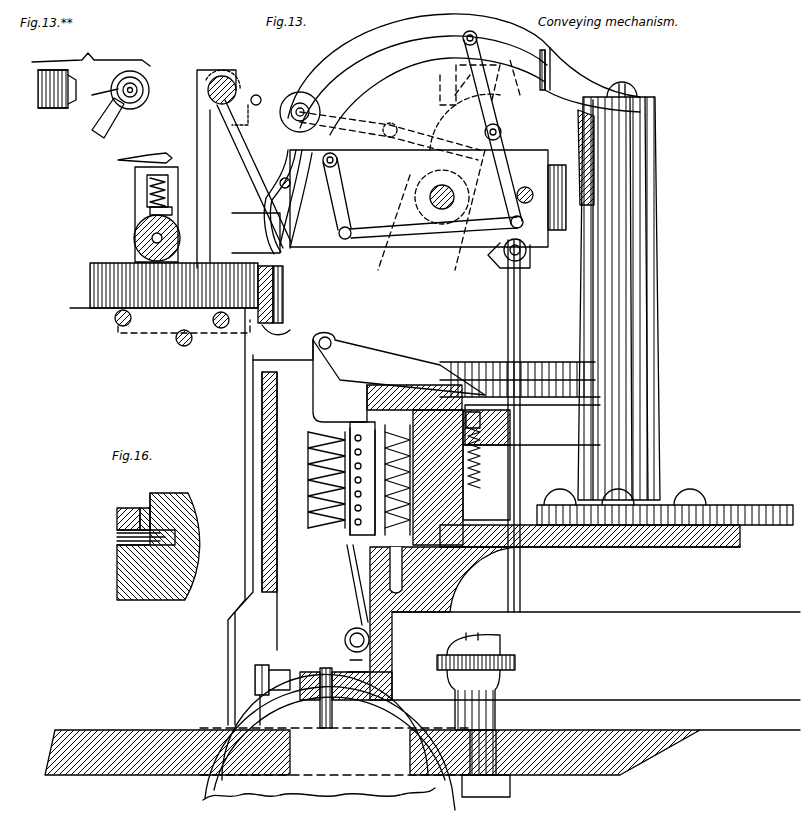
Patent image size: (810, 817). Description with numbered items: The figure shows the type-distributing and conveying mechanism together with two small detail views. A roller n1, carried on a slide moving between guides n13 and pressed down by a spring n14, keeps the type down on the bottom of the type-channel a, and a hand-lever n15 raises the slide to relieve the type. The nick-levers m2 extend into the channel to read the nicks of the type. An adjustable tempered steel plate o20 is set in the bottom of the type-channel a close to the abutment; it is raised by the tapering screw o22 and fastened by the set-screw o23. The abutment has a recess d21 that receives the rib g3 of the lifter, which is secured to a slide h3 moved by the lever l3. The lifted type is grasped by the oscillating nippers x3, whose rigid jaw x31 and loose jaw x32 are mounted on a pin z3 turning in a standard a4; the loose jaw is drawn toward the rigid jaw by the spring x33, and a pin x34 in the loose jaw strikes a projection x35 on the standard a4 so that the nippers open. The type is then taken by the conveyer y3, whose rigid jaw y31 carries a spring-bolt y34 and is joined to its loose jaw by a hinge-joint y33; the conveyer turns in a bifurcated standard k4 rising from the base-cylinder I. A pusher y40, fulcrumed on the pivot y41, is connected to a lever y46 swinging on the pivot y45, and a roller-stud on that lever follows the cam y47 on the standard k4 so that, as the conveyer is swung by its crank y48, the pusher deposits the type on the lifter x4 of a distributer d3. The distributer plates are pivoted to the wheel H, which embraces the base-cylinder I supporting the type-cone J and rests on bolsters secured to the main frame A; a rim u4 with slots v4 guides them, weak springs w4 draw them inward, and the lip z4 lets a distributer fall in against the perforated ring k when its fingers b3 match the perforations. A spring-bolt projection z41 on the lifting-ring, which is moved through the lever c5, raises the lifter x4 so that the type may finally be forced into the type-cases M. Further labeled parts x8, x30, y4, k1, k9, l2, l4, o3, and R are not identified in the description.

The spring x33 is at (70, 78).
The link x8 is at (101, 97).
The oscillating nippers x3 is at (108, 118).
In FIG. 13, the oscillating nippers x3 is at (278, 202).
In FIG. 16, the adjustable tempered steel plate o20 is at (144, 508).
In FIG. 13, the adjustable tempered steel plate o20 is at (184, 322).
In FIG. 16, the tapering screw o22 is at (120, 536).
In FIG. 13, the tapering screw o22 is at (189, 342).
In FIG. 16, the type-cone J is at (158, 546).
In FIG. 13, the cam y47 is at (476, 30).
In FIG. 13, the lever y46 is at (490, 108).
In FIG. 13, the pivot y45 is at (502, 132).
In FIG. 13, the conveyer y3 is at (419, 198).
In FIG. 13, the hinge-joint y33 is at (556, 172).
In FIG. 13, the spring-bolt y34 is at (526, 187).
In FIG. 13, the pivot y41 is at (334, 155).
In FIG. 13, the rigid jaw of conveyer y31 is at (436, 220).
In FIG. 13, the shaft y4 is at (442, 197).
In FIG. 13, the pusher y40 is at (302, 199).
In FIG. 13, the crank y48 is at (505, 253).
In FIG. 13, the rod k1 is at (580, 405).
In FIG. 13, the bifurcated standard k4 is at (619, 291).
In FIG. 13, the slots v4 is at (492, 362).
In FIG. 13, the rim u4 is at (535, 362).
In FIG. 13, the base-cylinder I is at (533, 424).
In FIG. 13, the lifter x4 is at (399, 364).
In FIG. 13, the distributer d3 is at (387, 381).
In FIG. 13, the type-cases M is at (446, 555).
In FIG. 13, the lip z4 is at (364, 467).
In FIG. 13, the fingers b3 is at (321, 477).
In FIG. 13, the lever c5 is at (363, 480).
In FIG. 13, the projection z41 is at (482, 414).
In FIG. 13, the lever l3 is at (270, 660).
In FIG. 13, the slide h3 is at (282, 477).
In FIG. 13, the rib g3 is at (270, 350).
In FIG. 13, the perforated ring k is at (275, 695).
In FIG. 13, the weak springs w4 is at (357, 608).
In FIG. 13, the pin k9 is at (346, 698).
In FIG. 13, the ring or wheel H is at (596, 656).
In FIG. 13, the bolt l4 is at (476, 715).
In FIG. 13, the main frame A is at (422, 745).
In FIG. 13, the rotary member R is at (335, 742).
In FIG. 13, the pin z3 is at (226, 76).
In FIG. 13, the rigid jaw of nippers x31 is at (248, 160).
In FIG. 13, the pin x34 is at (260, 93).
In FIG. 13, the loose jaw of nippers x32 is at (246, 116).
In FIG. 13, the projection x35 is at (218, 135).
In FIG. 13, the pin x30 is at (284, 169).
In FIG. 13, the standard a4 is at (233, 207).
In FIG. 13, the hand-lever n15 is at (145, 151).
In FIG. 13, the guides n13 is at (148, 214).
In FIG. 13, the spring n14 is at (166, 190).
In FIG. 13, the roller n1 is at (136, 226).
In FIG. 13, the type-channel a is at (164, 286).
In FIG. 13, the block l2 is at (270, 287).
In FIG. 13, the nick-levers m2 is at (283, 280).
In FIG. 13, the recess d21 is at (281, 327).
In FIG. 13, the screw o3 is at (118, 318).
In FIG. 13, the set-screw o23 is at (230, 318).